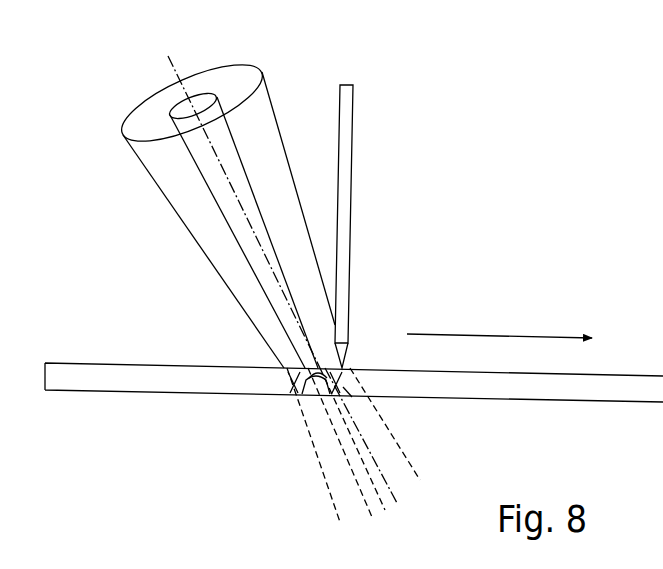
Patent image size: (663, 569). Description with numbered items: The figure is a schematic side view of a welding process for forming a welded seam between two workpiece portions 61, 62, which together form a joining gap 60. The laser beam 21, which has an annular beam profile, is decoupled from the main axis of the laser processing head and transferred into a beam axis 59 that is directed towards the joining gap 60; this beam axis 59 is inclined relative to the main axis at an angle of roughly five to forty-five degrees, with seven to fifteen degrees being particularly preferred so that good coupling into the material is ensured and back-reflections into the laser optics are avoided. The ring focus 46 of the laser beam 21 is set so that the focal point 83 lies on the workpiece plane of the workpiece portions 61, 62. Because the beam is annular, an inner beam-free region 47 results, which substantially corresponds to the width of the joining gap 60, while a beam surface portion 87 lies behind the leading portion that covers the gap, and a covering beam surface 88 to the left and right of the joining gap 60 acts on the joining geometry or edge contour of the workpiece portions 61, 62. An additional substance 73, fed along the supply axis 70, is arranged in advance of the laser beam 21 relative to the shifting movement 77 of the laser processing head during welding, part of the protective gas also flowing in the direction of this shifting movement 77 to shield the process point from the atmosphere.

The ring focus 46 is at (262, 56).
The laser beam 21 is at (150, 199).
The beam axis 59 is at (172, 67).
The additional substance 73 is at (358, 166).
The supply axis 70 is at (350, 366).
The shifting movement 77 is at (480, 334).
The workpiece portion 61 is at (354, 409).
The workpiece portion 62 is at (118, 394).
The focal point 83 is at (316, 370).
The joining gap 60 is at (300, 397).
The covering beam surface 88 is at (293, 395).
The beam surface portion 87 is at (352, 397).
The inner beam-free region 47 is at (351, 445).